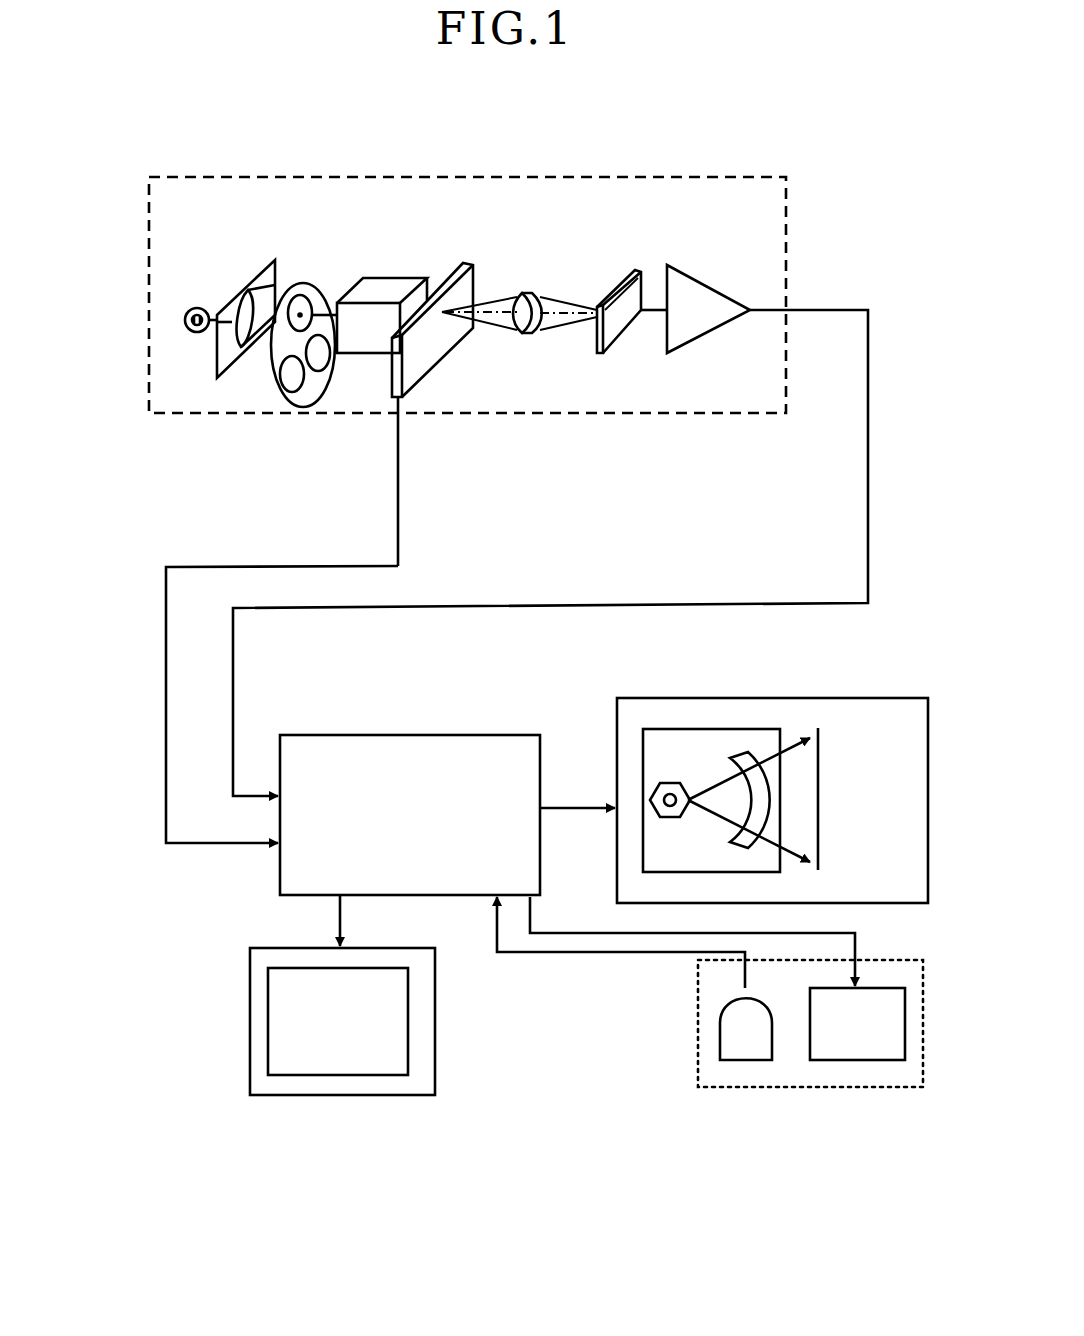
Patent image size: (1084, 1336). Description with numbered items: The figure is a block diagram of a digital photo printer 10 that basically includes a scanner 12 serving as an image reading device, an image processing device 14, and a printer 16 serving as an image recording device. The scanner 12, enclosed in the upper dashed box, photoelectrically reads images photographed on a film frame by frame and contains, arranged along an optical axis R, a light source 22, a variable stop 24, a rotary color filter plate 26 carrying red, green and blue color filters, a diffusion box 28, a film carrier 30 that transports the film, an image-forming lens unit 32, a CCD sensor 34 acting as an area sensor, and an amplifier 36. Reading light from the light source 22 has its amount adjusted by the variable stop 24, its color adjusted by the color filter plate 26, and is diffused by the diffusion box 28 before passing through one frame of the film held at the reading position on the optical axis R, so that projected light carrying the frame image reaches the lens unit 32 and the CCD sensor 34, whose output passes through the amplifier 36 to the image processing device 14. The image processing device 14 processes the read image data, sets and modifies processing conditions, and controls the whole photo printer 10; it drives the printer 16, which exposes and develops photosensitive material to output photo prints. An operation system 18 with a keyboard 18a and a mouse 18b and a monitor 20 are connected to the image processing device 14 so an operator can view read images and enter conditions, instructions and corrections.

The digital photo printer 10 is at (853, 188).
The scanner 12 is at (218, 418).
The image processing device 14 is at (408, 732).
The printer 16 is at (767, 698).
The operation system 18 is at (793, 1088).
The keyboard 18a is at (860, 1062).
The mouse 18b is at (737, 1062).
The monitor 20 is at (332, 1097).
The light source 22 is at (195, 307).
The variable stop 24 is at (253, 270).
The rotary color filter plate 26 is at (300, 285).
The diffusion box 28 is at (378, 295).
The film carrier 30 is at (460, 265).
The image-forming lens unit 32 is at (528, 293).
The CCD sensor 34 is at (620, 293).
The amplifier 36 is at (713, 335).
The optical axis R is at (548, 317).